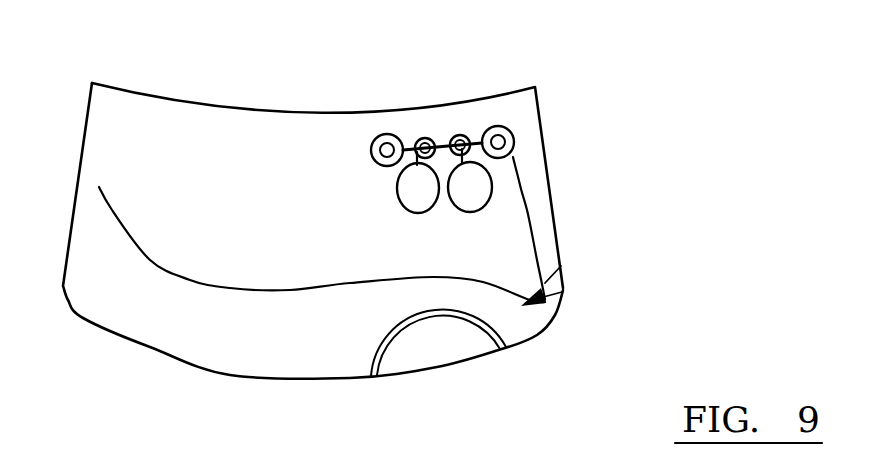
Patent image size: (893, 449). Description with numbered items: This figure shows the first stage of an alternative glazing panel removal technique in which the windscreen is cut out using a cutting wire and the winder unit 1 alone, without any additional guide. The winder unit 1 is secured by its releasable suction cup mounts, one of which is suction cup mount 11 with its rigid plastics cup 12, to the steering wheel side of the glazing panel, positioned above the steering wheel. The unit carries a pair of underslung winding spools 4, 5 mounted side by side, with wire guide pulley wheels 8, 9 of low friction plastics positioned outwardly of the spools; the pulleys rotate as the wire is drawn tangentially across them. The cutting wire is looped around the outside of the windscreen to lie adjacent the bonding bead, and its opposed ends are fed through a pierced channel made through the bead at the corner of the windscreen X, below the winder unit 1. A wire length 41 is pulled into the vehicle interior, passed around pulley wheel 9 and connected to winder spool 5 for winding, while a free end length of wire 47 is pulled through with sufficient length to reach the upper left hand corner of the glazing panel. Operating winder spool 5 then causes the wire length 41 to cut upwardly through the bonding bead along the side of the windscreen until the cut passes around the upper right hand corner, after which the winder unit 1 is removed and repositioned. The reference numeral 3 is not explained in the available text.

The winder unit 1 is at (403, 141).
The windshield 3 is at (255, 110).
The winding spool 4 is at (460, 135).
The winding spool 5 is at (420, 138).
The wire guide pulley wheel 8 is at (380, 135).
The wire guide pulley wheel 9 is at (493, 127).
The suction cup mount 11 is at (415, 188).
The rigid plastics cup 12 is at (468, 190).
The wire length 41 is at (550, 188).
The free end length of wire 47 is at (242, 290).
The corner of the windscreen X is at (550, 308).